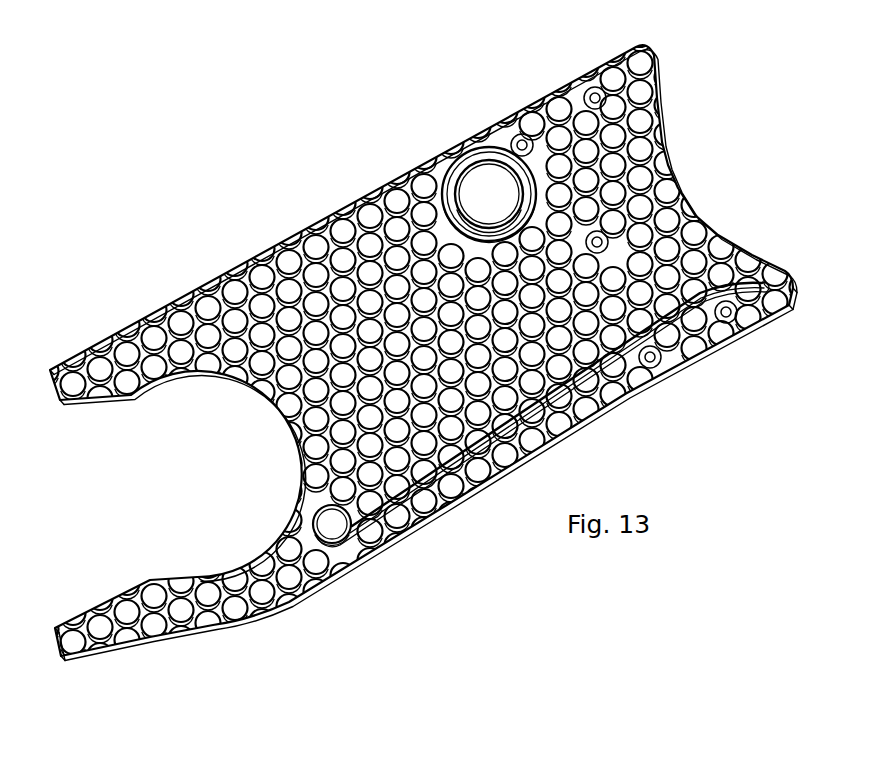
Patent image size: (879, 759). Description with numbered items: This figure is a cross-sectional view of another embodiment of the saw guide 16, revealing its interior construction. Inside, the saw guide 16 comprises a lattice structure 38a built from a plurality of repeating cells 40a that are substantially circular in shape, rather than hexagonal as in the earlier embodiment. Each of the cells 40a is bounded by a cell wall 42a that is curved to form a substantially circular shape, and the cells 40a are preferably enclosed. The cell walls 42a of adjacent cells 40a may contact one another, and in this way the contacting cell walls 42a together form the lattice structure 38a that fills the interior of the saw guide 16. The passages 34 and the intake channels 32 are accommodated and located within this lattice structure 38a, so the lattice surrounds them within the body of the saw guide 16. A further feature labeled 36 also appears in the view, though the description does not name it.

The saw guide 16 is at (157, 220).
The lattice structure 38a is at (333, 213).
The cells 40a is at (367, 217).
The cell wall 42a is at (578, 73).
The intake channels 32 is at (330, 527).
The passages 34 is at (390, 490).
The hole 36 is at (660, 360).